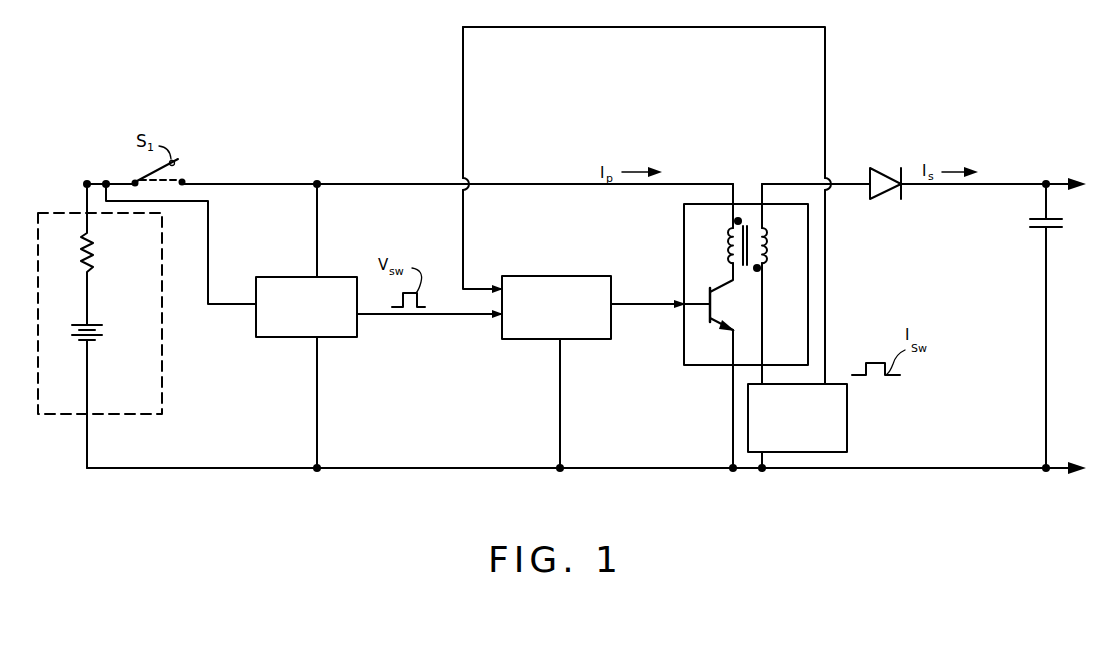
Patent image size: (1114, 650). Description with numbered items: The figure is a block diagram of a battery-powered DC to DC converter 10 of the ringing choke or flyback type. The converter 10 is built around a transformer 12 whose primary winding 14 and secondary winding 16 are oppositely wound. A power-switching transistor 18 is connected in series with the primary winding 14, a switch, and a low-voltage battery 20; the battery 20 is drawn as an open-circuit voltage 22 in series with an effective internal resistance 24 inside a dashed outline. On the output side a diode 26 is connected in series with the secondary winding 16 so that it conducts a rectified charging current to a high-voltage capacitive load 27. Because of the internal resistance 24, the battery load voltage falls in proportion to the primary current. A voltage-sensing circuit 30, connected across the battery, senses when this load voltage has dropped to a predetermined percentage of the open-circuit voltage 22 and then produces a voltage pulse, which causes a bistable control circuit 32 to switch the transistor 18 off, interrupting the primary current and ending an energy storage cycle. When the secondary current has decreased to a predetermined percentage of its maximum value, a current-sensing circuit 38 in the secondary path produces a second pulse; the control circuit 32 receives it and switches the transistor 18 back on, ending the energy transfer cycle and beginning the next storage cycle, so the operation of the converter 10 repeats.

The DC to DC converter 10 is at (741, 197).
The transformer 12 is at (745, 290).
The primary winding 14 is at (733, 244).
The secondary winding 16 is at (766, 250).
The power-switching transistor 18 is at (716, 324).
The low-voltage battery 20 is at (57, 207).
The open-circuit voltage 22 is at (100, 322).
The internal resistance 24 is at (94, 248).
The diode 26 is at (878, 199).
The high-voltage capacitive load 27 is at (1054, 216).
The voltage-sensing circuit 30 is at (262, 337).
The bistable control circuit 32 is at (595, 276).
The current-sensing circuit 38 is at (847, 432).